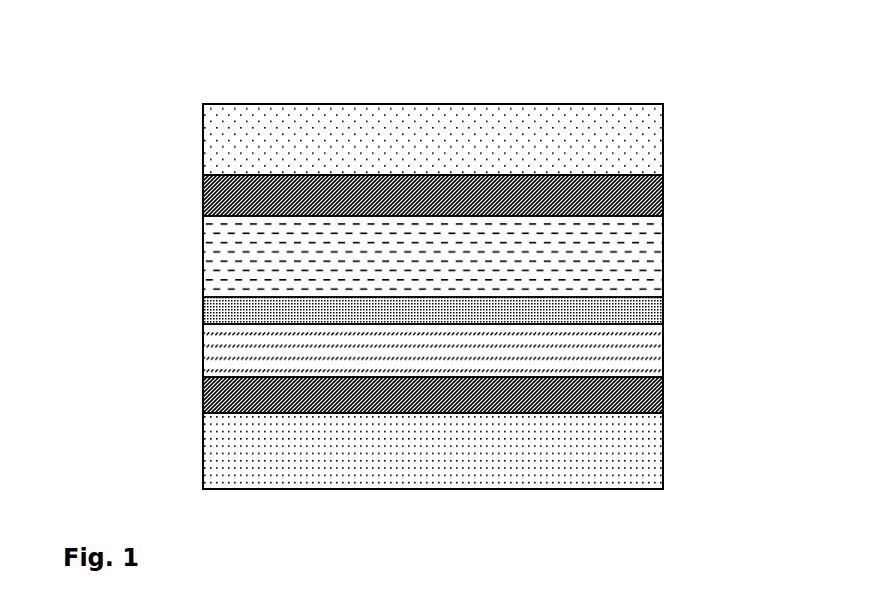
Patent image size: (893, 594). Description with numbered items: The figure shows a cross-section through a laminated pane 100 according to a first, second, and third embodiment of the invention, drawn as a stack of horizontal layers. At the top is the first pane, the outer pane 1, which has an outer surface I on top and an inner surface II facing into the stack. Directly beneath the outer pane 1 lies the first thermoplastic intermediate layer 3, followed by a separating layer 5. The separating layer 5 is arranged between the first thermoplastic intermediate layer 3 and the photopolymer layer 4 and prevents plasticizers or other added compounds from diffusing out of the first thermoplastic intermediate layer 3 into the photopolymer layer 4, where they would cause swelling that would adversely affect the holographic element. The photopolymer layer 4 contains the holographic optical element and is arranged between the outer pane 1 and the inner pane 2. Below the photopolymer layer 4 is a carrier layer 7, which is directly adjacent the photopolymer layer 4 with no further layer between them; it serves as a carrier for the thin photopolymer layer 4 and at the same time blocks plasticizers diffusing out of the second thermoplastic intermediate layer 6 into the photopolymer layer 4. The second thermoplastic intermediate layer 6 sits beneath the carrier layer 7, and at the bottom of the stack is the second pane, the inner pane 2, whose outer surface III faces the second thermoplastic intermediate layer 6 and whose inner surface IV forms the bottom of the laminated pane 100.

The laminated pane 100 is at (157, 77).
The outer pane 1 is at (657, 135).
The inner pane 2 is at (655, 432).
The first thermoplastic intermediate layer 3 is at (653, 200).
The photopolymer layer having a holographic optical element 4 is at (643, 304).
The separating layer 5 is at (637, 268).
The second thermoplastic intermediate layer 6 is at (655, 397).
The carrier layer 7 is at (647, 348).
The outer surface of the outer pane I is at (468, 103).
The inner surface of the outer pane II is at (228, 175).
The outer surface of the inner pane III is at (243, 413).
The inner surface of the inner pane IV is at (552, 490).